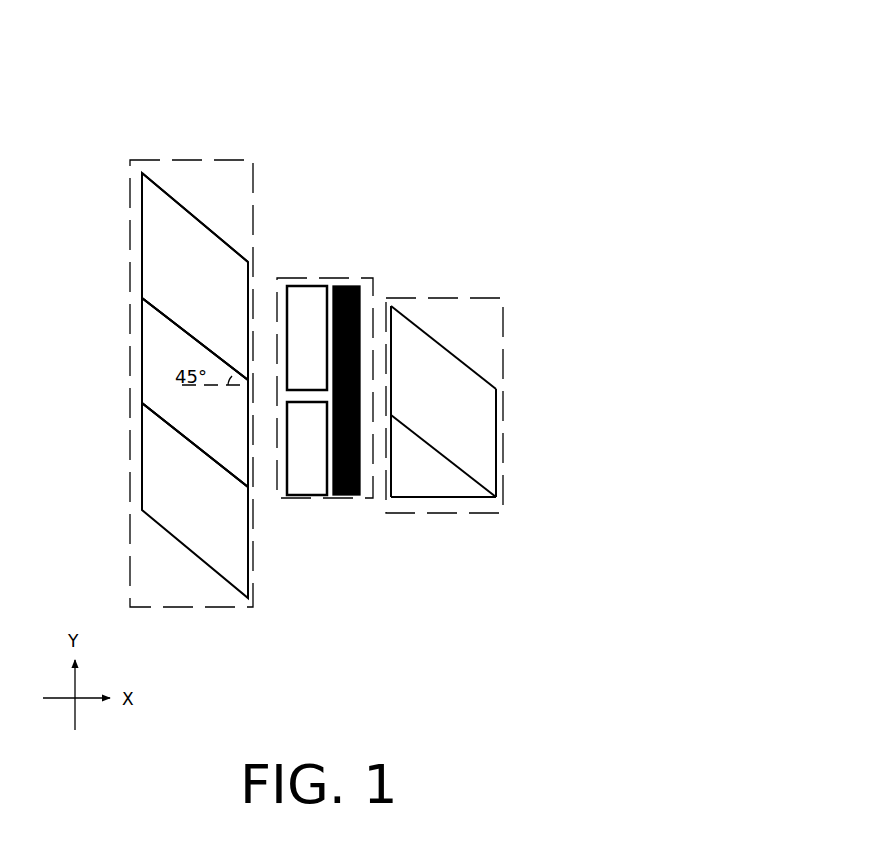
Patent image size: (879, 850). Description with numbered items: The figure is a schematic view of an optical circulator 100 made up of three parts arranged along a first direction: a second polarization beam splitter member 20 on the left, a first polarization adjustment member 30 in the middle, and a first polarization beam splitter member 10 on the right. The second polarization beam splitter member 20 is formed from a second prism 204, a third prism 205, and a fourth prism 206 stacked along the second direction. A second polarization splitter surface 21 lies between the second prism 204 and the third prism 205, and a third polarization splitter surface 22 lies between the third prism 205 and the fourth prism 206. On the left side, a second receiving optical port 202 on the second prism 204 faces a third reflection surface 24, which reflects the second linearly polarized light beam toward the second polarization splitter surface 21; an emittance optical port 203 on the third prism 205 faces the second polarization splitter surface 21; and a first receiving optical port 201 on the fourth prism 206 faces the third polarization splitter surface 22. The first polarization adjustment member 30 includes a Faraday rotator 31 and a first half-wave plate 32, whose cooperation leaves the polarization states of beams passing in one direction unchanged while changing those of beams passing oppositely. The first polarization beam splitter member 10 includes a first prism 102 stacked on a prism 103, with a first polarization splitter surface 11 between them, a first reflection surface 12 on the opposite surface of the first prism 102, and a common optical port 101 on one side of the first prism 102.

The optical circulator 100 is at (376, 126).
The second polarization beam splitter member 20 is at (228, 158).
The second prism 204 is at (160, 212).
The third reflection surface 24 is at (193, 216).
The second receiving optical port 202 is at (140, 255).
The third prism 205 is at (152, 332).
The second polarization splitter surface 21 is at (187, 336).
The emittance optical port 203 is at (140, 373).
The fourth prism 206 is at (155, 438).
The third polarization splitter surface 22 is at (185, 440).
The first receiving optical port 201 is at (140, 485).
The first polarization adjustment member 30 is at (351, 276).
The Faraday rotator 31 is at (302, 482).
The first half-wave plate 32 is at (345, 495).
The first polarization beam splitter member 10 is at (484, 293).
The first reflection surface 12 is at (467, 365).
The first prism 102 is at (472, 400).
The common optical port 101 is at (498, 415).
The first polarization splitter surface 11 is at (470, 480).
The prism 103 is at (445, 485).